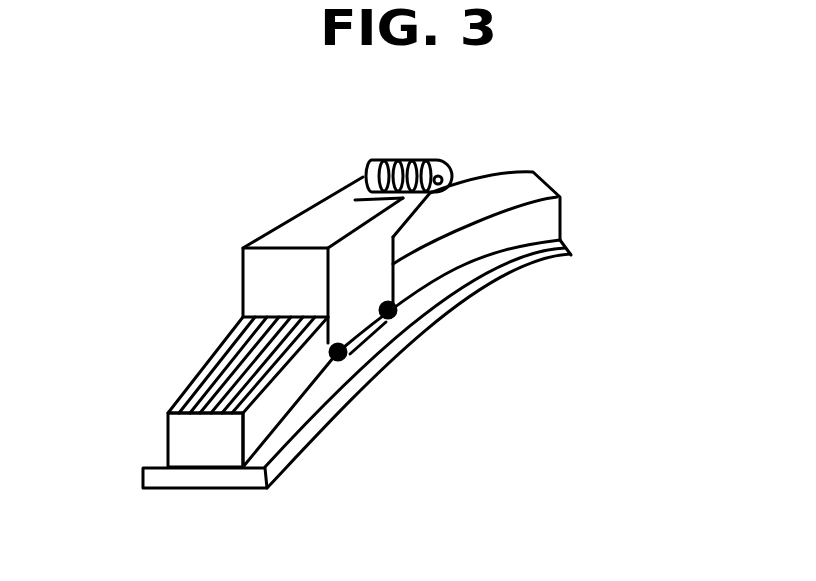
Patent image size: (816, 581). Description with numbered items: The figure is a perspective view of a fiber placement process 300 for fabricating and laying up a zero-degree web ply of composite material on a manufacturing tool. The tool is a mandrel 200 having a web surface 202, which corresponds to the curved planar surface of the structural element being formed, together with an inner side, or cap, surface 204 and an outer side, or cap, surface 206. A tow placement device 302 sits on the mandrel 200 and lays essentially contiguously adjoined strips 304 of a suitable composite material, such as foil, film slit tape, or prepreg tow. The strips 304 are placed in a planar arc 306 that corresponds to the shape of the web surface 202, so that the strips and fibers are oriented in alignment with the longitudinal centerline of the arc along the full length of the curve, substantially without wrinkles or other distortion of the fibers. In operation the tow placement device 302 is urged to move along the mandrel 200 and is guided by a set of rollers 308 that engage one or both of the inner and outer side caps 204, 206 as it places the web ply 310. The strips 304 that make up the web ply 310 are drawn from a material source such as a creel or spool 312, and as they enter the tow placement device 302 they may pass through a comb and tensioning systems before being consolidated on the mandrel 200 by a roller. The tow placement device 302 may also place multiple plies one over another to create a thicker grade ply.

The mandrel 200 is at (403, 345).
The web surface 202 is at (527, 188).
The inner side cap surface 204 is at (547, 218).
The outer side cap surface 206 is at (148, 457).
The fiber placement process 300 is at (276, 289).
The tow placement device 302 is at (308, 218).
The strips 304 is at (167, 425).
The planar arc 306 is at (211, 375).
The rollers 308 is at (350, 346).
The web ply 310 is at (240, 383).
The spool 312 is at (418, 158).